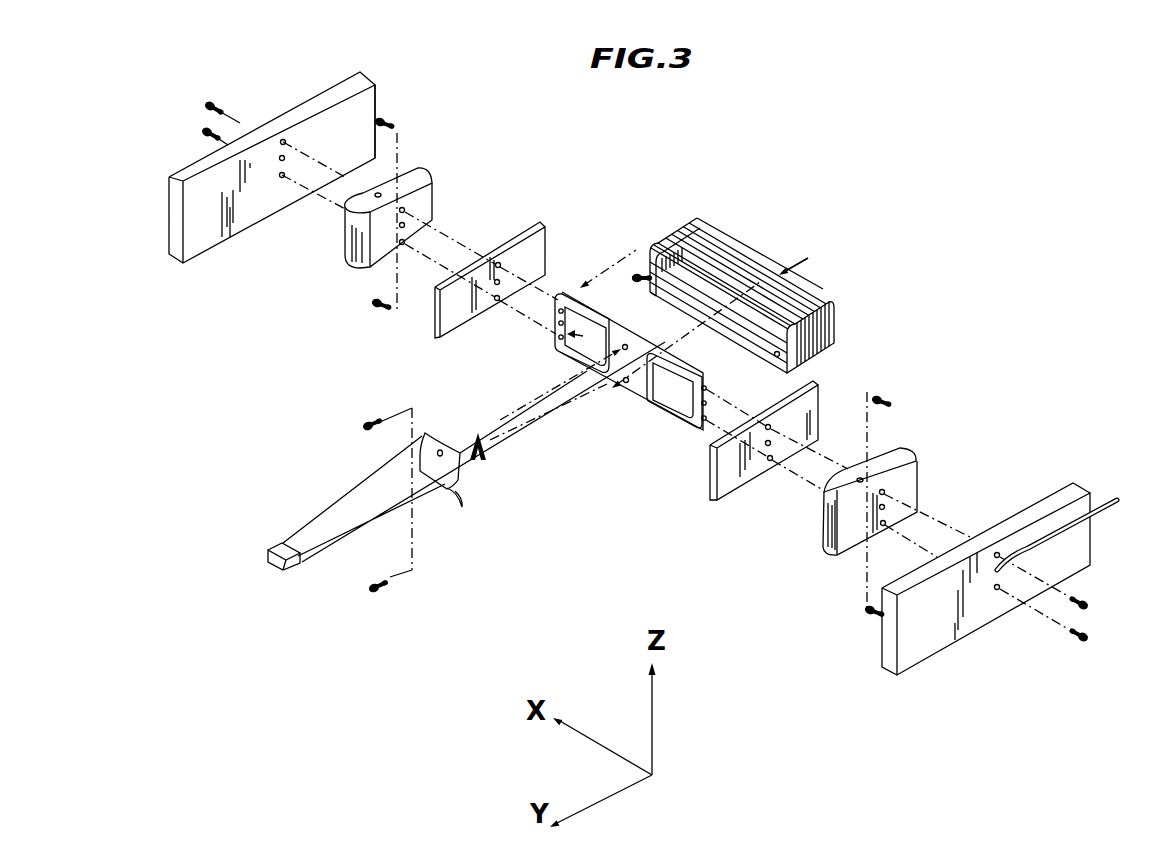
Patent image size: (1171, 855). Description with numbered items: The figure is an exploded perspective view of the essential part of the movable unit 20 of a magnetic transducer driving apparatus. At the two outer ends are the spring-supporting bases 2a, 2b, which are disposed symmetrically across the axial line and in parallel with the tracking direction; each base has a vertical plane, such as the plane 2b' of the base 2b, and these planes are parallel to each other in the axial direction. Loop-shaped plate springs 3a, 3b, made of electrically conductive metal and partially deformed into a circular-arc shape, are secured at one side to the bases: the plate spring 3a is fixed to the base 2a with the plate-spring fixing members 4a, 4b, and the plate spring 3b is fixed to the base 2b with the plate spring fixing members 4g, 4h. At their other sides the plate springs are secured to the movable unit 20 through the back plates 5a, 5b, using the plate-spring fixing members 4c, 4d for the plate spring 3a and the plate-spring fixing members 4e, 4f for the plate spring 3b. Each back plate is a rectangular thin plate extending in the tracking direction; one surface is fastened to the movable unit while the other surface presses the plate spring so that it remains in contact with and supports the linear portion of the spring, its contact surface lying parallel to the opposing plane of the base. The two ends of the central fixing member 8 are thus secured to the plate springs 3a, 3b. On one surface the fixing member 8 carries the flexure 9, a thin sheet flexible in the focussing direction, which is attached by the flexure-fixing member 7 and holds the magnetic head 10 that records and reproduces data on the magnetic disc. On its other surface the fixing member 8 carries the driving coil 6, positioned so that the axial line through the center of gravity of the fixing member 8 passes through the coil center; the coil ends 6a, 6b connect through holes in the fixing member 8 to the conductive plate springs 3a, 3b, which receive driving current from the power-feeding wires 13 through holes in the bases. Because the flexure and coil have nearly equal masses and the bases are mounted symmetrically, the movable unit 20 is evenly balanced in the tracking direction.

The spring-supporting base 2a is at (1087, 548).
The spring-supporting base 2b is at (274, 142).
The vertical plane 2b' is at (401, 104).
The plate spring 3a is at (917, 467).
The plate spring 3b is at (423, 178).
The plate-spring fixing member 4a is at (1092, 604).
The plate-spring fixing member 4b is at (1092, 640).
The plate-spring fixing member 4c is at (887, 397).
The plate-spring fixing member 4d is at (868, 612).
The plate-spring fixing member 4e is at (390, 124).
The plate-spring fixing member 4f is at (372, 305).
The plate spring fixing member 4g is at (207, 102).
The plate spring fixing member 4h is at (204, 133).
The back plate 5a is at (820, 400).
The back plate 5b is at (542, 243).
The driving coil 6 is at (705, 235).
The end of driving coil 6a is at (820, 290).
The end of driving coil 6b is at (642, 270).
The flexure-fixing member 7 is at (362, 425).
The fixing member 8 is at (637, 388).
The flexure 9 is at (358, 513).
The magnetic head 10 is at (282, 572).
The power-feeding wires 13 is at (1109, 500).
The movable unit 20 is at (586, 481).